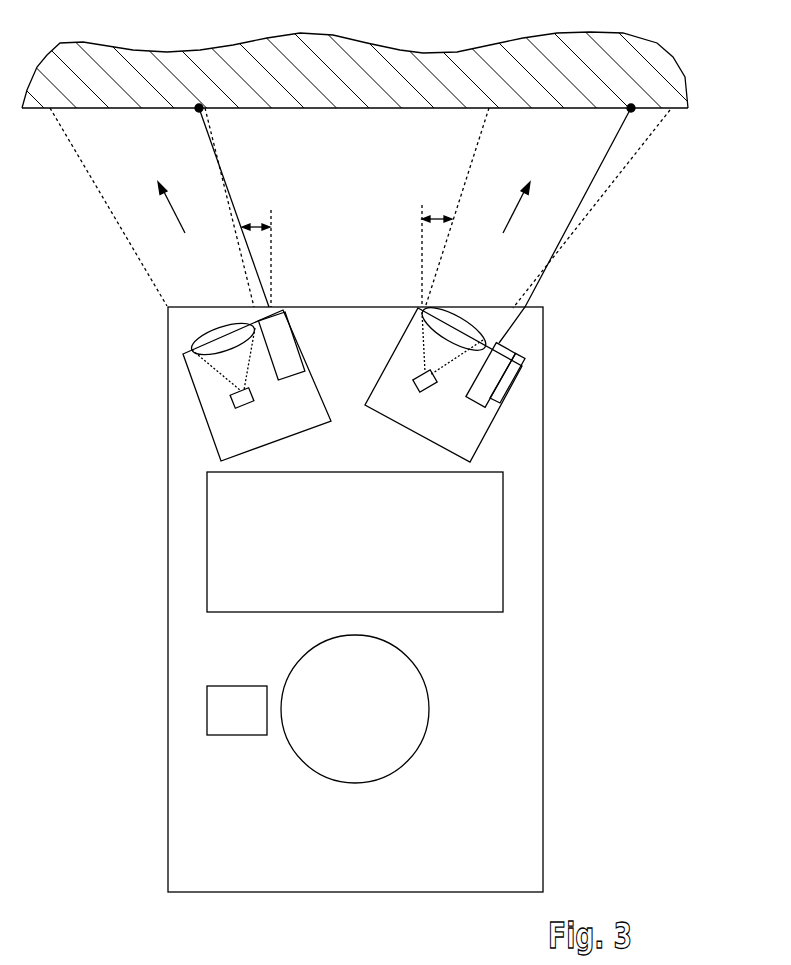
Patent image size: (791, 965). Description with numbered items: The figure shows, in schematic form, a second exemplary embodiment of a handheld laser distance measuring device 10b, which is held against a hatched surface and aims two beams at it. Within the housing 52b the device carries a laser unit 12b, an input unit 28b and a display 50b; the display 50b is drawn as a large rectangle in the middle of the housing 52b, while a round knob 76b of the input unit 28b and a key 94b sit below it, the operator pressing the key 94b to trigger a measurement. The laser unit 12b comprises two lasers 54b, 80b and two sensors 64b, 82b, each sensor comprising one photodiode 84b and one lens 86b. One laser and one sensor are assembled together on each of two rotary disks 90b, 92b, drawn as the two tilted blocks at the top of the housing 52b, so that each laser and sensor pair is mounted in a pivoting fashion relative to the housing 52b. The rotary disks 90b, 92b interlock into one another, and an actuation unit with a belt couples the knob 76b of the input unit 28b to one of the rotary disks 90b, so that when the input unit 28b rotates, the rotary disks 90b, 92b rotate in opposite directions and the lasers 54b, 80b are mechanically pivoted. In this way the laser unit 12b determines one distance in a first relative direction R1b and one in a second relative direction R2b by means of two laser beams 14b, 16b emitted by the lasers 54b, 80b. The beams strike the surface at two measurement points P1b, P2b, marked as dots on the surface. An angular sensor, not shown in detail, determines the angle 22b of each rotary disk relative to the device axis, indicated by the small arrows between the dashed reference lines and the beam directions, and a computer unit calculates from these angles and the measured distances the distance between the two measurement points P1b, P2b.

The handheld laser distance measuring device 10b is at (584, 318).
The laser unit 12b is at (150, 359).
The laser beam 14b is at (208, 133).
The laser beam 16b is at (604, 160).
The angle 22b is at (256, 224).
The input unit 28b is at (150, 707).
The display 50b is at (475, 599).
The housing 52b is at (532, 773).
The laser 54b is at (275, 320).
The sensor 64b is at (200, 408).
The knob 76b is at (354, 775).
The laser 80b is at (493, 375).
The sensor 82b is at (396, 311).
The photodiode 84b is at (238, 407).
The lens 86b is at (218, 334).
The rotary disk 90b is at (197, 373).
The rotary disk 92b is at (470, 437).
The key 94b is at (236, 726).
The measurement point P1b is at (199, 104).
The measurement point P2b is at (631, 104).
The first relative direction R1b is at (177, 212).
The second relative direction R2b is at (514, 212).